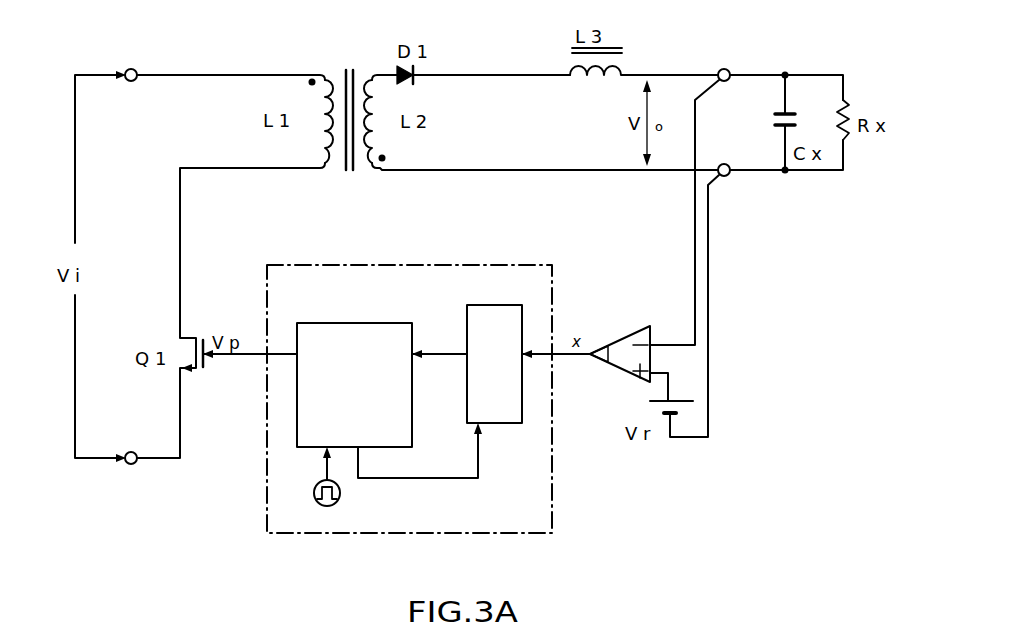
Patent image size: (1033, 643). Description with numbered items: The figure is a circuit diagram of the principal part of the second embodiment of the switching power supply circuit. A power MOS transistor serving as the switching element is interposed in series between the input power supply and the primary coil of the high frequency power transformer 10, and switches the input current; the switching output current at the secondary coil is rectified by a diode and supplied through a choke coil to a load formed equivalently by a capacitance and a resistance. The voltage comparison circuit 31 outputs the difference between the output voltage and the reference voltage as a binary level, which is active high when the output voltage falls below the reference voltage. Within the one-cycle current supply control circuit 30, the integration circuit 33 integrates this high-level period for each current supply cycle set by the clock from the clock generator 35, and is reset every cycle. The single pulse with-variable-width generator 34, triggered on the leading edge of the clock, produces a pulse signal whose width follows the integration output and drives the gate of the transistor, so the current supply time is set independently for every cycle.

The high frequency power transformer 10 is at (350, 67).
The one-cycle current supply control circuit 30 is at (509, 258).
The voltage comparison circuit 31 is at (641, 326).
The integration circuit 33 is at (481, 305).
The single pulse with-variable-width generator 34 is at (334, 322).
The clock generator 35 is at (340, 497).